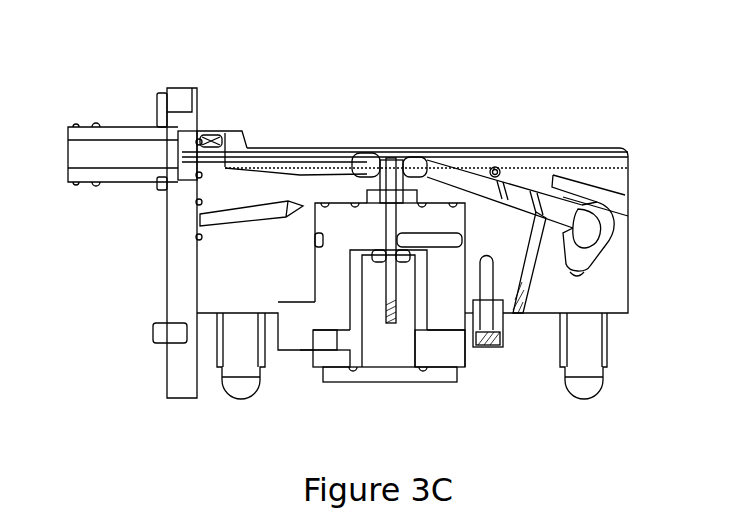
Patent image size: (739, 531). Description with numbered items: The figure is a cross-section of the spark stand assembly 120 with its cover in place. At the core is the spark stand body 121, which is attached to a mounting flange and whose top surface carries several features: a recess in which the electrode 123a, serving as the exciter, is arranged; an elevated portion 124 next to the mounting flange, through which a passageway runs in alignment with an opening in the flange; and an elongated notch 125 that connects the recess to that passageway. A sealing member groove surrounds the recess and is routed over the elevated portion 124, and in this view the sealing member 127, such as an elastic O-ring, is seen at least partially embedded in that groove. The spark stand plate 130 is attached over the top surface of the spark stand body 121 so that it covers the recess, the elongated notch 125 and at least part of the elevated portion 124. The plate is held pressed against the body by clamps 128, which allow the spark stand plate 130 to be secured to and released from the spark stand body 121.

The spark stand assembly 120 is at (373, 28).
The spark stand body 121 is at (225, 263).
The electrode 123a is at (403, 148).
The elevated portion 124 is at (240, 131).
The elongated notch 125 is at (341, 148).
The sealing member 127 is at (213, 137).
The clamps 128 is at (240, 390).
The spark stand plate 130 is at (570, 157).